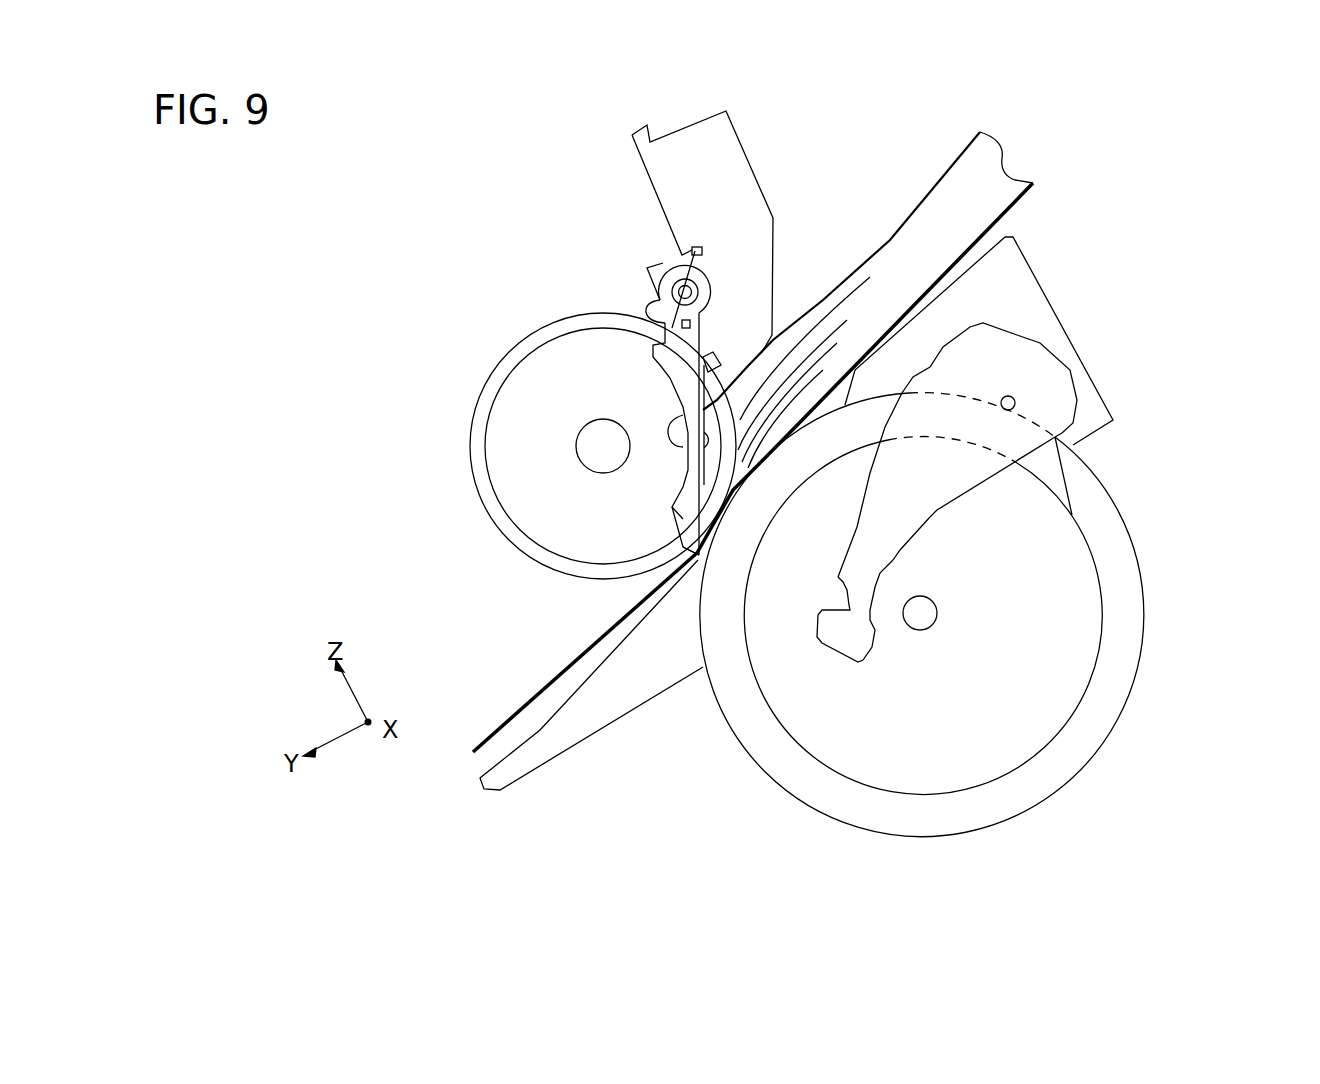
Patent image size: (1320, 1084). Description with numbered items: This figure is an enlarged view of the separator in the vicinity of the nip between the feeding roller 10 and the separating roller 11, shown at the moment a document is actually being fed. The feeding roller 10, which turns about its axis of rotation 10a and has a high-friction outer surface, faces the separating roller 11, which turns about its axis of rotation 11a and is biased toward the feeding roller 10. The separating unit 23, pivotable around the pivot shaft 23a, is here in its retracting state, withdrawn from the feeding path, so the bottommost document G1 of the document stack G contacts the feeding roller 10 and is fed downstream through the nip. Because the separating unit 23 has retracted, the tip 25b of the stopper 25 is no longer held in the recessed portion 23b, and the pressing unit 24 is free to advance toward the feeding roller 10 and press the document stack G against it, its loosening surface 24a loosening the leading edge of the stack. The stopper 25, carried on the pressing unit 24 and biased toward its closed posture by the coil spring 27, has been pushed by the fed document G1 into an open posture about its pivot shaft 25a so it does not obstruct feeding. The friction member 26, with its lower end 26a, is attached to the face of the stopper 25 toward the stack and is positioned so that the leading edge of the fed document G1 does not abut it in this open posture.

The feeding roller 10 is at (1133, 537).
The axis of rotation of the feeding roller 10a is at (937, 618).
The separating roller 11 is at (516, 343).
The axis of rotation of the separating roller 11a is at (583, 445).
The separating unit 23 is at (887, 470).
The pivot shaft 23a is at (1013, 398).
The recessed portion 23b is at (848, 607).
The pressing unit 24 is at (738, 137).
The loosening surface 24a is at (683, 407).
The stopper 25 is at (700, 343).
The pivot shaft 25a is at (662, 263).
The tip of the stopper 25b is at (690, 547).
The friction member 26 is at (703, 453).
The lower end of the friction member 26a is at (687, 518).
The coil spring 27 is at (672, 292).
The document stack G is at (930, 208).
The bottommost document G1 is at (500, 732).